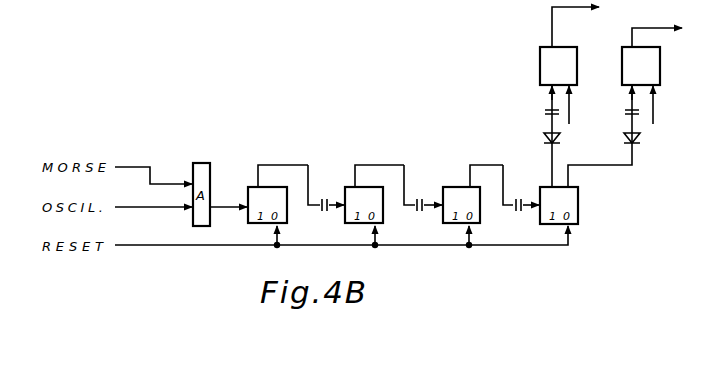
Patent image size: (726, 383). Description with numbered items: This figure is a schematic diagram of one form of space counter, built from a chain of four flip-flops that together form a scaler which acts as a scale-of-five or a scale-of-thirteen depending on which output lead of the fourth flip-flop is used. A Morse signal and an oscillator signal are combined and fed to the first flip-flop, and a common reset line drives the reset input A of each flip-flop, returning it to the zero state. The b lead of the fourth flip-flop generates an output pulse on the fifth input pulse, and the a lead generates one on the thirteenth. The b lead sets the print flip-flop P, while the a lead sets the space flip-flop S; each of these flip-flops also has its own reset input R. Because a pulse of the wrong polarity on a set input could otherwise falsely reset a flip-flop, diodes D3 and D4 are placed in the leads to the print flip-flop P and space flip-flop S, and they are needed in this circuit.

The reset input A is at (281, 240).
The 0 output lead a is at (468, 175).
The 1 output lead b is at (257, 173).
The print flip-flop P is at (569, 60).
The space flip-flop S is at (652, 71).
The reset input R is at (620, 110).
The diode D3 is at (560, 138).
The diode D4 is at (640, 138).